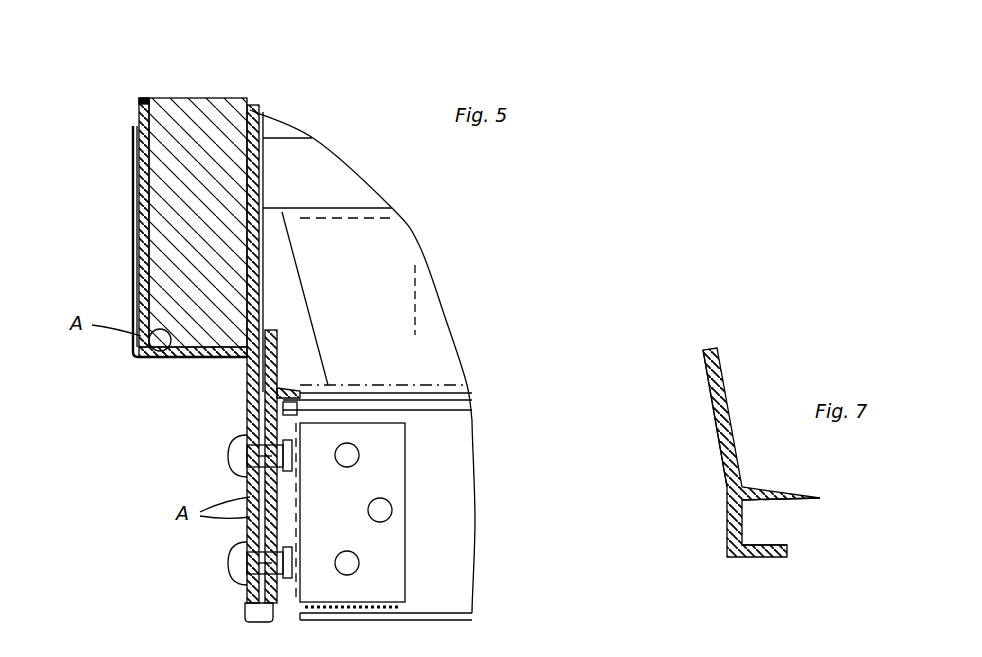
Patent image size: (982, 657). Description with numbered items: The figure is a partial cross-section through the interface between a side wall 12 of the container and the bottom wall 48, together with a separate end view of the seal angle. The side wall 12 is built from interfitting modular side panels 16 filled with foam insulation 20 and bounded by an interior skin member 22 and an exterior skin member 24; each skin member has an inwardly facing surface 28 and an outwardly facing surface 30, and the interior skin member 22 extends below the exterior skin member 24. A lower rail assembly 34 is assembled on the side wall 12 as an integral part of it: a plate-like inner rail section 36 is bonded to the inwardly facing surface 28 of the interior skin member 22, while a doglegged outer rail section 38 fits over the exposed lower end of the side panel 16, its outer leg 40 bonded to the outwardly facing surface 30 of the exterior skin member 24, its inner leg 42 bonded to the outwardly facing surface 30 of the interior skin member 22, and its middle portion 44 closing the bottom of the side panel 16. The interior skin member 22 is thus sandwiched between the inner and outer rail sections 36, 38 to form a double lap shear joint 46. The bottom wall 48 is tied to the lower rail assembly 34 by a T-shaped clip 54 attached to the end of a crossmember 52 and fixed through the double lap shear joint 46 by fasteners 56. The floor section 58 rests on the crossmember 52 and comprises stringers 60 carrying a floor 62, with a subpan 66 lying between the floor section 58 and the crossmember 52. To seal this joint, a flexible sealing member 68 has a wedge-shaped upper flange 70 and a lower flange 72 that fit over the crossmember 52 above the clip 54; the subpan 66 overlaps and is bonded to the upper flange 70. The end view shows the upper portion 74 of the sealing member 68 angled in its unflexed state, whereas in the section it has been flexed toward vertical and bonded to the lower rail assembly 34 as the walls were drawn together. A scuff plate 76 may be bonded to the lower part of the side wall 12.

In FIG. 5, the side wall 12 is at (243, 80).
In FIG. 5, the modular side panel 16 is at (134, 98).
In FIG. 5, the foam insulation 20 is at (200, 118).
In FIG. 5, the interior skin member 22 is at (256, 108).
In FIG. 5, the exterior skin member 24 is at (139, 112).
In FIG. 5, the inwardly facing surface 28 is at (168, 350).
In FIG. 5, the outwardly facing surface 30 is at (246, 232).
In FIG. 5, the lower rail assembly 34 is at (130, 440).
In FIG. 5, the inner rail section 36 is at (266, 291).
In FIG. 5, the outer rail section 38 is at (128, 214).
In FIG. 5, the outer leg 40 is at (134, 168).
In FIG. 5, the inner leg 42 is at (246, 607).
In FIG. 5, the middle portion 44 is at (180, 358).
In FIG. 5, the double lap shear joint 46 is at (240, 340).
In FIG. 5, the bottom wall 48 is at (424, 243).
In FIG. 5, the crossmember 52 is at (446, 621).
In FIG. 5, the T-shaped clip 54 is at (384, 452).
In FIG. 5, the fastener 56 is at (232, 457).
In FIG. 5, the floor section 58 is at (450, 322).
In FIG. 5, the stringer 60 is at (313, 208).
In FIG. 5, the floor 62 is at (312, 150).
In FIG. 5, the subpan 66 is at (448, 393).
In FIG. 5, the sealing member 68 is at (315, 442).
In FIG. 7, the sealing member 68 is at (730, 447).
In FIG. 5, the upper flange 70 is at (285, 392).
In FIG. 7, the upper flange 70 is at (782, 494).
In FIG. 5, the lower flange 72 is at (297, 427).
In FIG. 7, the lower flange 72 is at (770, 558).
In FIG. 5, the upper portion 74 is at (273, 333).
In FIG. 7, the upper portion 74 is at (713, 398).
In FIG. 5, the scuff plate 76 is at (268, 166).